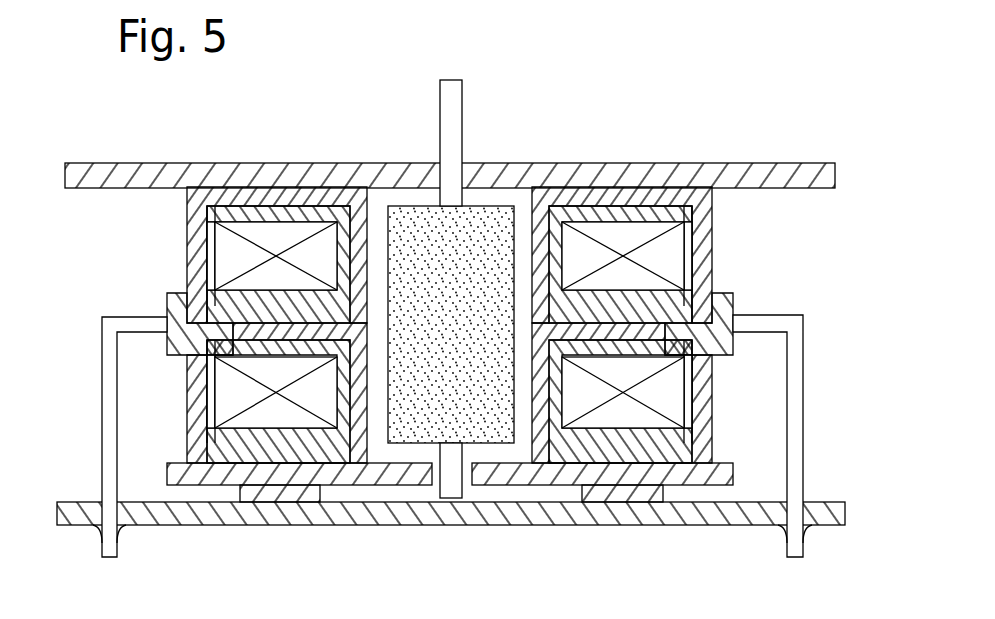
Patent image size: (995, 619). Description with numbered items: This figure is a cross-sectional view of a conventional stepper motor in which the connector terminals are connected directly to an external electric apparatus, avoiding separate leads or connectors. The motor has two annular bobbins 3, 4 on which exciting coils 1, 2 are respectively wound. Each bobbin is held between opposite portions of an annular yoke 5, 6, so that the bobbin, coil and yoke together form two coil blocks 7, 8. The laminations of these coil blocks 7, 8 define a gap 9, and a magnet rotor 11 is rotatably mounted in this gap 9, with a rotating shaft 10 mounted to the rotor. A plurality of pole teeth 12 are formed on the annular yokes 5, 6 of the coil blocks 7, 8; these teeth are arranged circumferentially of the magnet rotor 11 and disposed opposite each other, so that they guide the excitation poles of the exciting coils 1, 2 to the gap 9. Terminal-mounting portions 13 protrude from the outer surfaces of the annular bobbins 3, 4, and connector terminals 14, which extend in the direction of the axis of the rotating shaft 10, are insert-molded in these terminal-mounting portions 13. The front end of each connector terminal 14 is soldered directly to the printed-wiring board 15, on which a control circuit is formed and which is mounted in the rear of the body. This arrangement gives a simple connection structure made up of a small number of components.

The exciting coil 1 is at (628, 237).
The exciting coil 2 is at (233, 392).
The annular bobbin 3 is at (607, 213).
The annular bobbin 4 is at (313, 437).
The annular yoke 5 is at (702, 282).
The annular yoke 6 is at (272, 330).
The coil block 7 is at (702, 216).
The coil block 8 is at (748, 418).
The gap 9 is at (524, 212).
The rotating shaft 10 is at (453, 112).
The magnet rotor 11 is at (410, 197).
The pole teeth 12 is at (380, 282).
The terminal-mounting portion 13 is at (175, 310).
The connector terminal 14 is at (105, 408).
The printed-wiring board 15 is at (597, 513).